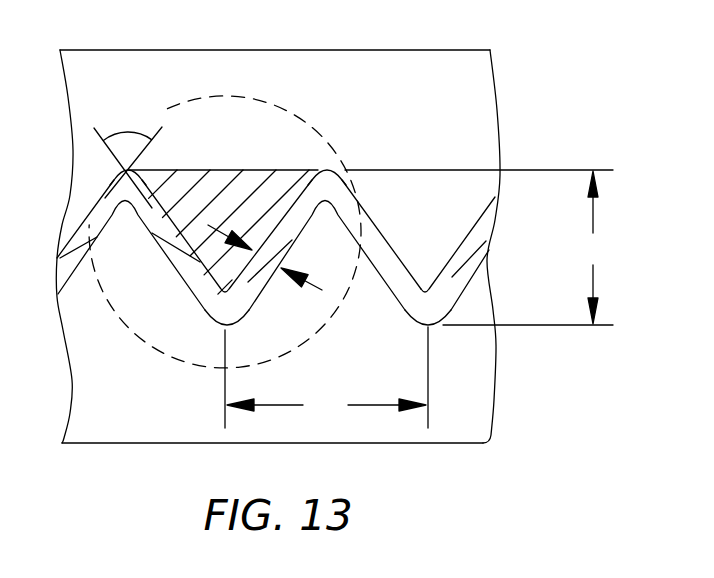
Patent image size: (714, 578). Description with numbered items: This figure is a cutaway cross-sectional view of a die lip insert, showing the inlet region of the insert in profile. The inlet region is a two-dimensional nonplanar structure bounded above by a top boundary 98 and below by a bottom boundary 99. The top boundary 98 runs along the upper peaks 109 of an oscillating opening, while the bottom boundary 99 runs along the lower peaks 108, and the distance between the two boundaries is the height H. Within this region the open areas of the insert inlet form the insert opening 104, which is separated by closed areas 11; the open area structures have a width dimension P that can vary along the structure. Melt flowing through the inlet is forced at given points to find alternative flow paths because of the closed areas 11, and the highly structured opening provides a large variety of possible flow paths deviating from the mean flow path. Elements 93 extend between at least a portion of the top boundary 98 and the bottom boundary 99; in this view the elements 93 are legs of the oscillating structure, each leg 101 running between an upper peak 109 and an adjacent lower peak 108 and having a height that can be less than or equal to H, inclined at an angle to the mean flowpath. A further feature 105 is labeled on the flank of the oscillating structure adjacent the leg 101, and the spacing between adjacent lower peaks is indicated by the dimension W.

The closed areas 11 is at (202, 194).
The elements 93 is at (381, 222).
The top boundary 98 is at (550, 168).
The bottom boundary 99 is at (530, 327).
The leg 101 is at (454, 276).
The insert opening 104 is at (431, 327).
The thread groove 105 is at (423, 245).
The lower peaks 108 is at (424, 329).
The upper peaks 109 is at (317, 168).
The width dimension P is at (322, 290).
The distance between top and bottom boundaries H is at (592, 247).
The thread pitch width W is at (326, 377).